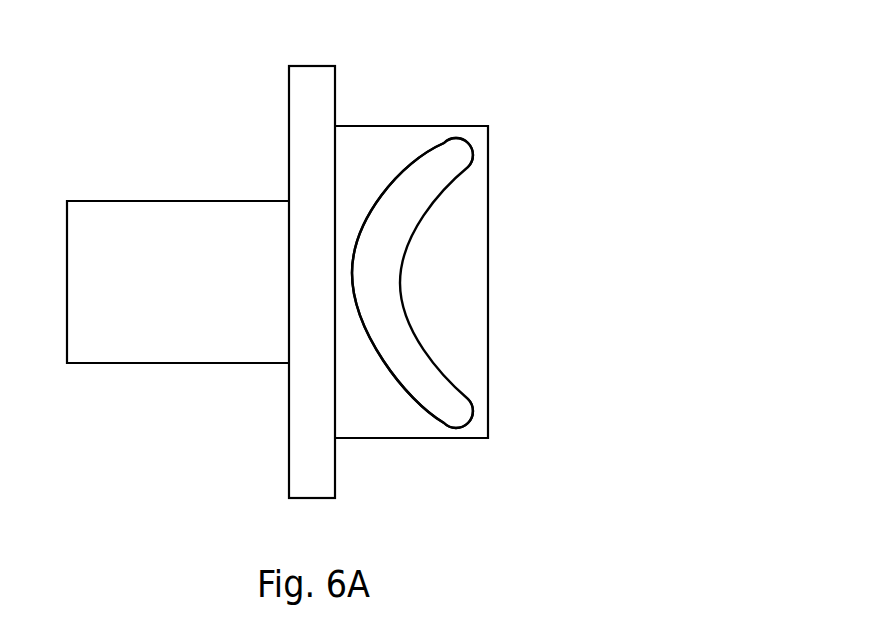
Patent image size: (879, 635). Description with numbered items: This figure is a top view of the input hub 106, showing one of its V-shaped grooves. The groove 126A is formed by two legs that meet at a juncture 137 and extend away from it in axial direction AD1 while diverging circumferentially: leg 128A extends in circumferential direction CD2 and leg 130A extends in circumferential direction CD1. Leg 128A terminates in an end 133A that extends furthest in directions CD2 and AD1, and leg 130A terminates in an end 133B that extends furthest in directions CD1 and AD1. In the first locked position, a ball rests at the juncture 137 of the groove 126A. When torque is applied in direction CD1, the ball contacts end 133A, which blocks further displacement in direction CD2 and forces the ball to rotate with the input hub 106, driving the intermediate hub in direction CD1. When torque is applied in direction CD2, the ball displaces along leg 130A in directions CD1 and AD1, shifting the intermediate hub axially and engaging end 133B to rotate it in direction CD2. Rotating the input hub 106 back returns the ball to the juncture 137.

The input hub 106 is at (605, 101).
The V-shaped groove 126A is at (401, 283).
The leg 130A is at (414, 198).
The leg 128A is at (413, 358).
The end 133B is at (463, 137).
The end 133A is at (458, 424).
The juncture 137 is at (368, 295).